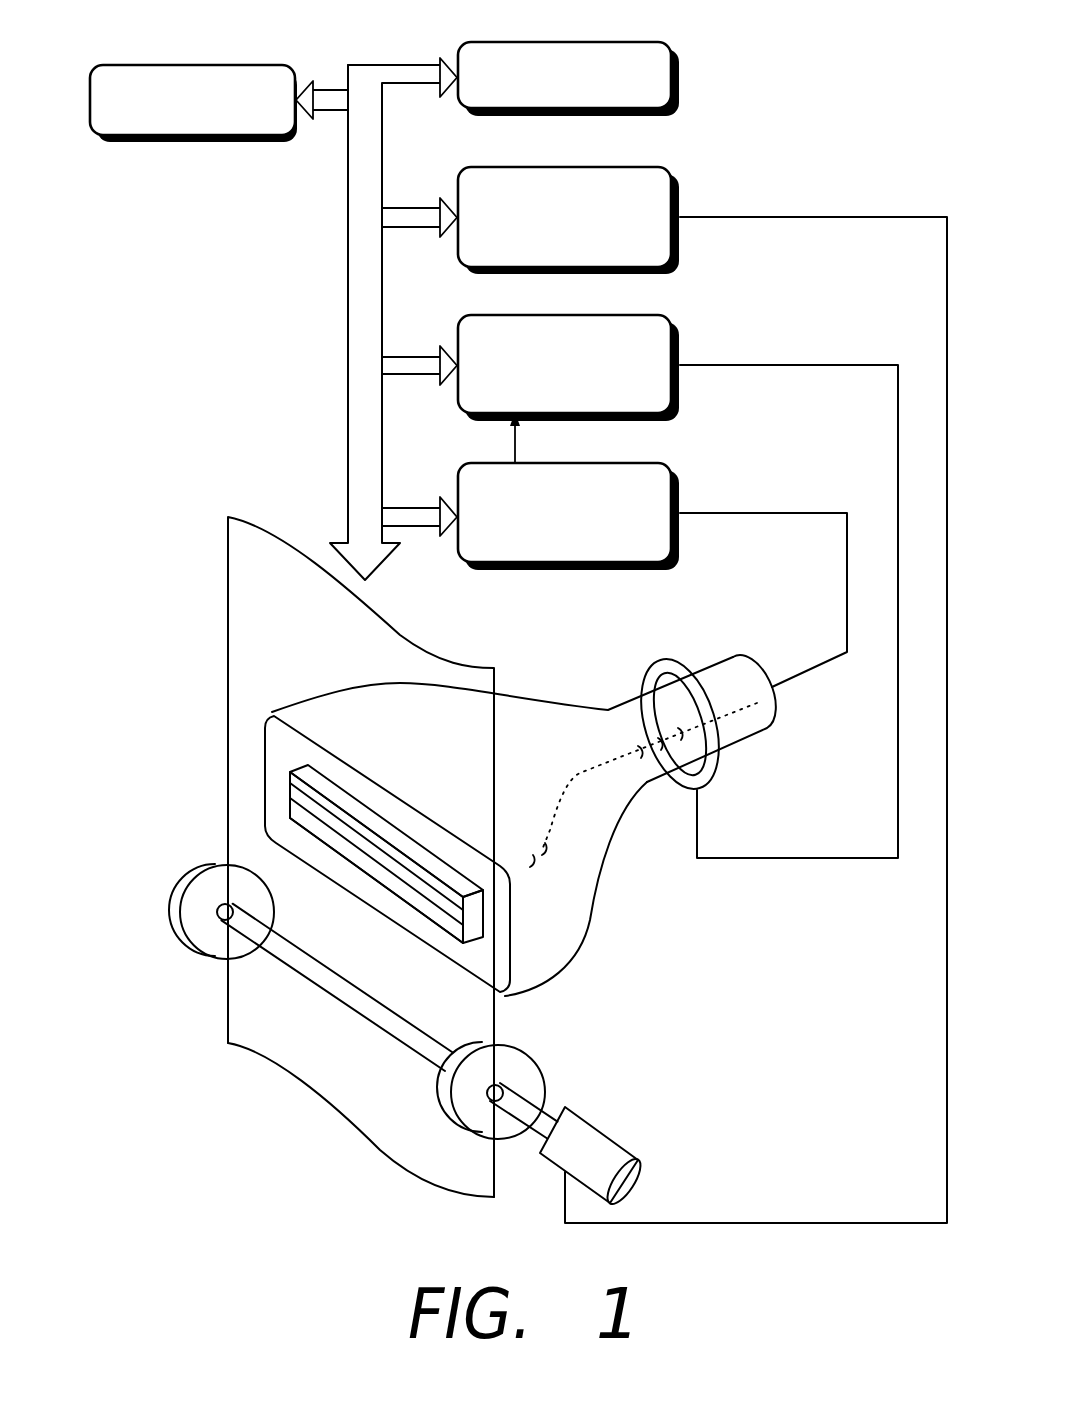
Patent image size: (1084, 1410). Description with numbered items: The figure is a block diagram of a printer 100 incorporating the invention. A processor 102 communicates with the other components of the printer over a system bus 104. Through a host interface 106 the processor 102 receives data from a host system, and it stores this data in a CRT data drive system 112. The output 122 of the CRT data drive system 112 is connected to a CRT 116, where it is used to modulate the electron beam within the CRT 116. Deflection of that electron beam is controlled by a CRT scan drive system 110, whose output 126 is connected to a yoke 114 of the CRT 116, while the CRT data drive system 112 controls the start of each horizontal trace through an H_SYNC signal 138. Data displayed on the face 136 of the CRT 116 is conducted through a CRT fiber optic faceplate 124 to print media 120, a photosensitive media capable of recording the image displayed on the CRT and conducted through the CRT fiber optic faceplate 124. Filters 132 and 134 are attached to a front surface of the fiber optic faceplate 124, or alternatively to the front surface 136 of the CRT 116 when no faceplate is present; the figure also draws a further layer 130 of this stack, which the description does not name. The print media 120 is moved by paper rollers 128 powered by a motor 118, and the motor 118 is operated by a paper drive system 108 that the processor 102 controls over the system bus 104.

The printer 100 is at (834, 96).
The processor 102 is at (680, 60).
The system bus 104 is at (348, 279).
The host interface 106 is at (183, 66).
The paper drive system 108 is at (681, 192).
The CRT scan drive system 110 is at (680, 344).
The CRT data drive system 112 is at (681, 492).
The yoke 114 is at (712, 791).
The CRT 116 is at (527, 700).
The motor 118 is at (590, 1114).
The print media 120 is at (247, 653).
The output 122 is at (806, 513).
The CRT fiber optic faceplate 124 is at (372, 810).
The output 126 is at (815, 365).
The paper rollers 128 is at (243, 954).
The media layer 130 is at (296, 798).
The filter 132 is at (296, 783).
The filter 134 is at (296, 815).
The face 136 is at (275, 727).
The H_SYNC signal 138 is at (514, 429).